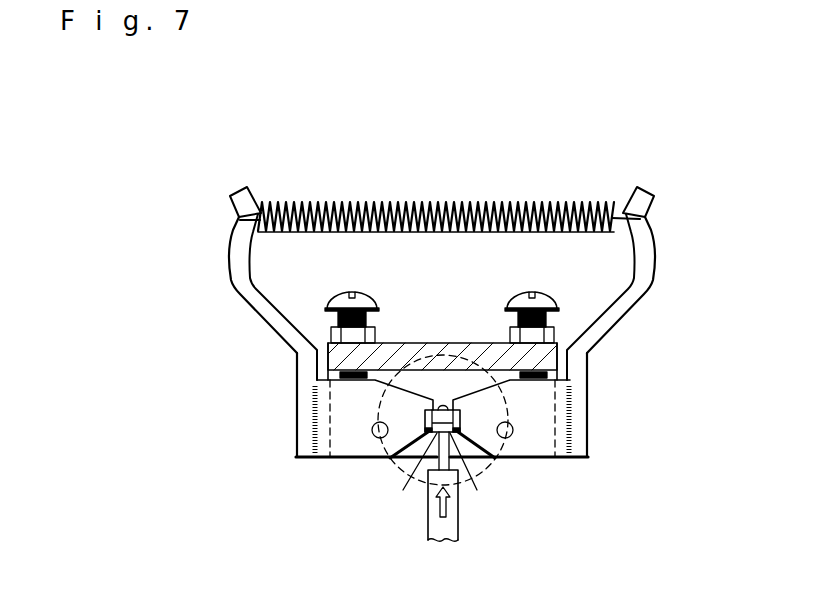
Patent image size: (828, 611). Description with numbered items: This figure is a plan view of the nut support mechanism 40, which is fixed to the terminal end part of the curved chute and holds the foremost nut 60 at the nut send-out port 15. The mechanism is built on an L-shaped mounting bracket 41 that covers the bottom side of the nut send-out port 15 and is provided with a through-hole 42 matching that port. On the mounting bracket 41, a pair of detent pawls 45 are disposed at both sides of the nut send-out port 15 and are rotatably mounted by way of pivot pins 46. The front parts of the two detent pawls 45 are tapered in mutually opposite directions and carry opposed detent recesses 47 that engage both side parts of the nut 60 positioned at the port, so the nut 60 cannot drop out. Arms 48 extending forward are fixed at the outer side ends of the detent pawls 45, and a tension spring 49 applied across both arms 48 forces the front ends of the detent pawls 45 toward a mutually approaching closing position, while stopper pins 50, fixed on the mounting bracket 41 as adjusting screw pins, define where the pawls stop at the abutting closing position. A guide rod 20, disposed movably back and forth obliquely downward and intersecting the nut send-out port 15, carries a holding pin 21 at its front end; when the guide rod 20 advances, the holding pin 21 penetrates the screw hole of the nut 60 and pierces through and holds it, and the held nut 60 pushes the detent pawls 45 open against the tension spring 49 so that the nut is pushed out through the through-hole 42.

The nut send-out port 15 is at (462, 382).
The guide rod 20 is at (445, 522).
The holding pin 21 is at (477, 490).
The nut support mechanism 40 is at (297, 407).
The mounting bracket 41 is at (395, 342).
The through-hole 42 is at (453, 362).
The detent pawl 45 is at (343, 442).
The pivot pin 46 is at (376, 437).
The detent recess 47 is at (403, 490).
The arm 48 is at (244, 285).
The tension spring 49 is at (442, 201).
The stopper pin 50 is at (336, 296).
The nut 60 is at (444, 410).